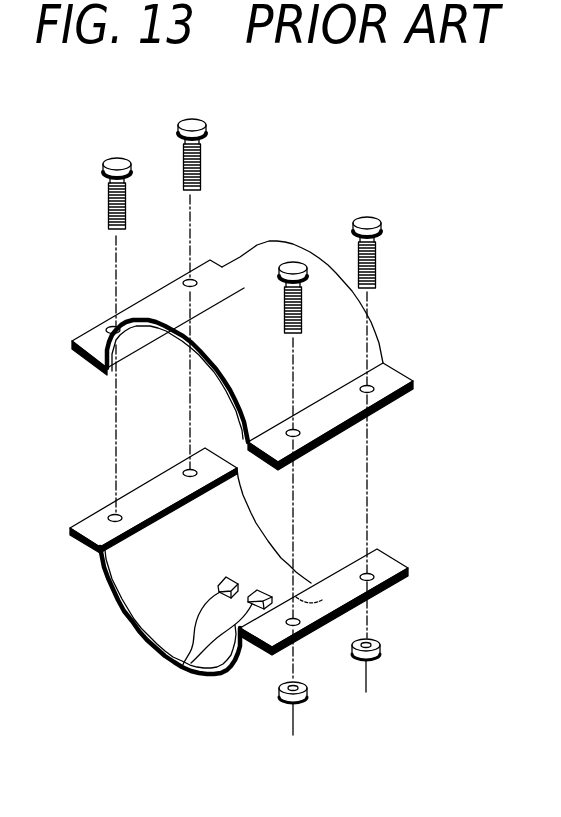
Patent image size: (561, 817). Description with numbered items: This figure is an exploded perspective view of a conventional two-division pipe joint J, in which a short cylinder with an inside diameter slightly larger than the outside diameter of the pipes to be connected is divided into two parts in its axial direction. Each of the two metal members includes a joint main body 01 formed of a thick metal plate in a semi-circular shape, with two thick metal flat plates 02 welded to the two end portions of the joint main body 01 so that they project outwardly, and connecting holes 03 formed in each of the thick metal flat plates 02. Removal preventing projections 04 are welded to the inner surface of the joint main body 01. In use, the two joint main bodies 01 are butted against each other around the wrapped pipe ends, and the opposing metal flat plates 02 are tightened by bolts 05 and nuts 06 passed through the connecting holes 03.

The pipe joint J is at (80, 313).
The joint main body 01 is at (262, 245).
The thick metal flat plate 02 is at (94, 345).
The connecting hole 03 is at (374, 392).
The removal preventing projection 04 is at (191, 662).
The bolt 05 is at (188, 124).
The nut 06 is at (363, 661).